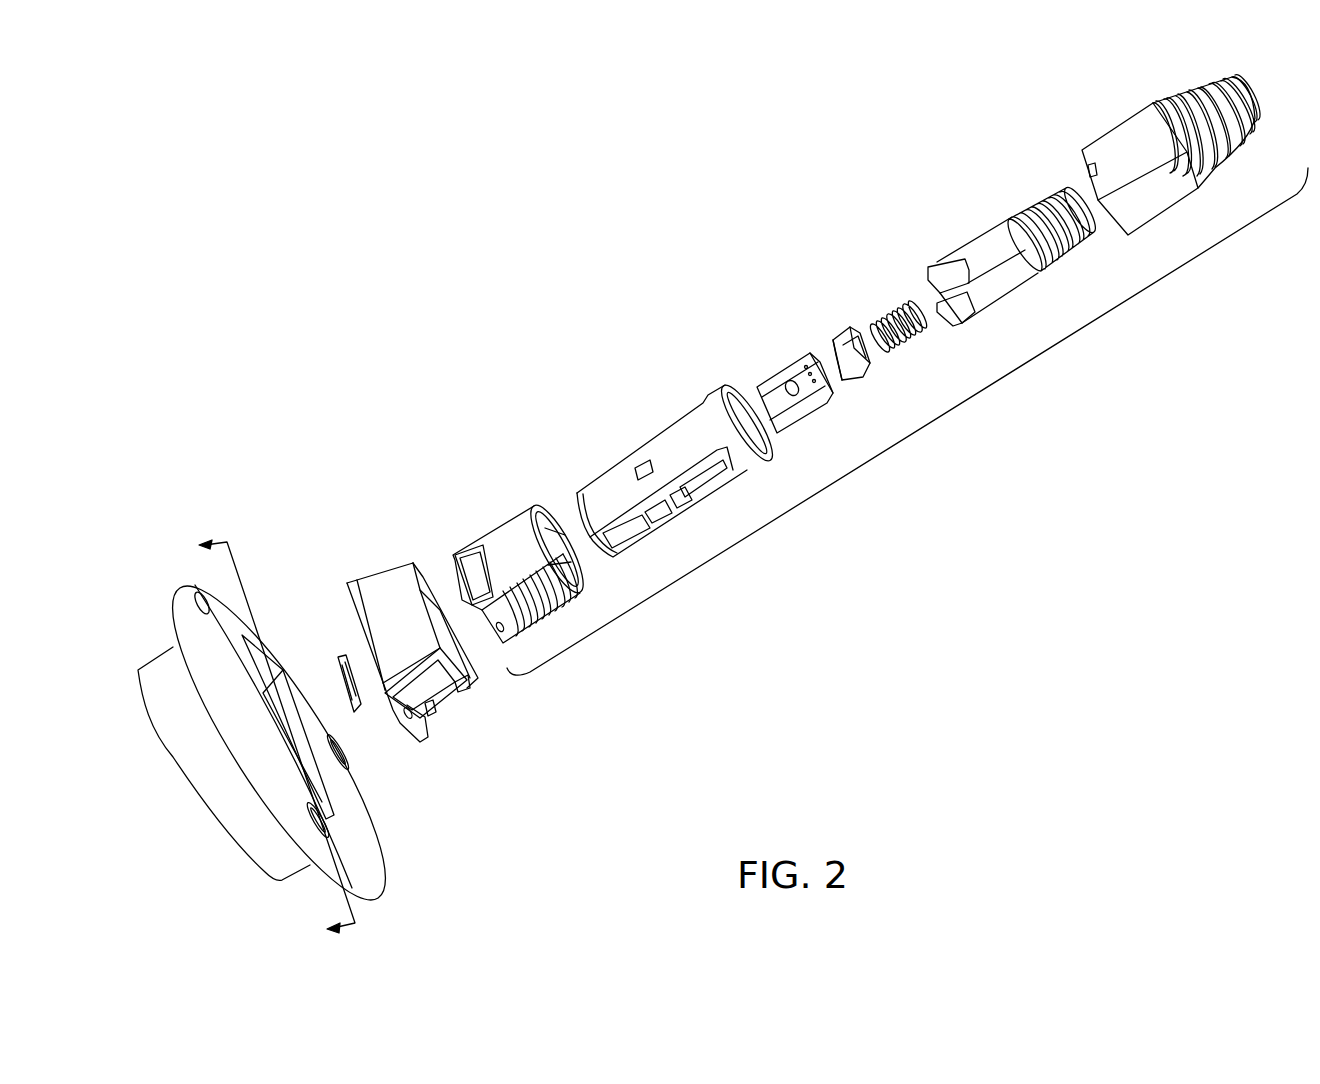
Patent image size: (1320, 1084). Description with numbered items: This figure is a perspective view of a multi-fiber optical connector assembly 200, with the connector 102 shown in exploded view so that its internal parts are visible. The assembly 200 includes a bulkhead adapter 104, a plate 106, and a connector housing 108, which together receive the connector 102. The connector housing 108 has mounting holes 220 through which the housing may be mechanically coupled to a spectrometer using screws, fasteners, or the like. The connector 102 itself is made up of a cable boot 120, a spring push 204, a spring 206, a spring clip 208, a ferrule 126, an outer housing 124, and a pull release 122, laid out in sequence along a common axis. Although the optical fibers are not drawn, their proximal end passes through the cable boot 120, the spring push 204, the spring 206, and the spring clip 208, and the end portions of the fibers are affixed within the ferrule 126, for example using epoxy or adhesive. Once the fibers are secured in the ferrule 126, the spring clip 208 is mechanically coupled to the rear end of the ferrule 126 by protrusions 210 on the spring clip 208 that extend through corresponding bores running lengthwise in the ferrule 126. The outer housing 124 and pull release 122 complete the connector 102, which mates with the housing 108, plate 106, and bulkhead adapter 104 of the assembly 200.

The multi-fiber optical connector assembly 200 is at (496, 278).
The mounting holes 220 is at (198, 590).
The connector housing 108 is at (283, 647).
The plate 106 is at (336, 652).
The bulkhead adapter 104 is at (392, 570).
The pull release 122 is at (500, 520).
The outer housing 124 is at (665, 428).
The ferrule 126 is at (782, 368).
The spring clip 208 is at (847, 330).
The protrusions 210 is at (832, 345).
The spring 206 is at (893, 302).
The spring push 204 is at (968, 242).
The cable boot 120 is at (1100, 150).
The connector 102 is at (922, 425).